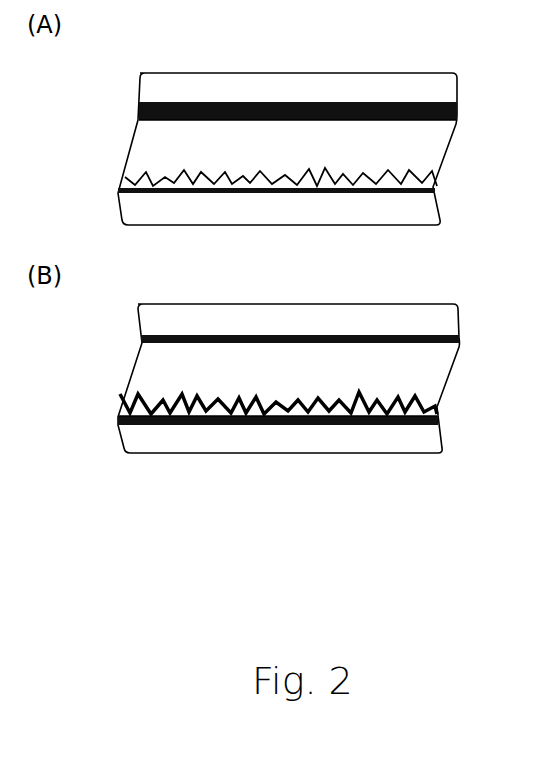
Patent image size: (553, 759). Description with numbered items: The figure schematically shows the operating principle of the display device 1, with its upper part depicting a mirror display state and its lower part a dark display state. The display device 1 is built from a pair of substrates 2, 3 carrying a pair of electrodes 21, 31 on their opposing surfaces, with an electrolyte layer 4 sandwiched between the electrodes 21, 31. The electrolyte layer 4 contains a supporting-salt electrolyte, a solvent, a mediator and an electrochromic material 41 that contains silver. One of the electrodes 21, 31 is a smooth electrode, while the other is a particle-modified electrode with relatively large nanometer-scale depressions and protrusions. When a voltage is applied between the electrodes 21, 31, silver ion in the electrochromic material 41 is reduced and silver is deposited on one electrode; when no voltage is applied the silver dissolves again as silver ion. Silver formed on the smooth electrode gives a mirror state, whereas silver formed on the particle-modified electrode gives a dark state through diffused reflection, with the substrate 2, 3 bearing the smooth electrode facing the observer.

The display device 1 is at (285, 70).
The substrate 2 is at (138, 85).
The electrode 21 is at (138, 111).
The electrolyte layer 4 is at (130, 142).
The electrode 31 is at (122, 176).
The substrate 3 is at (118, 209).
The electrochromic material 41 is at (458, 118).